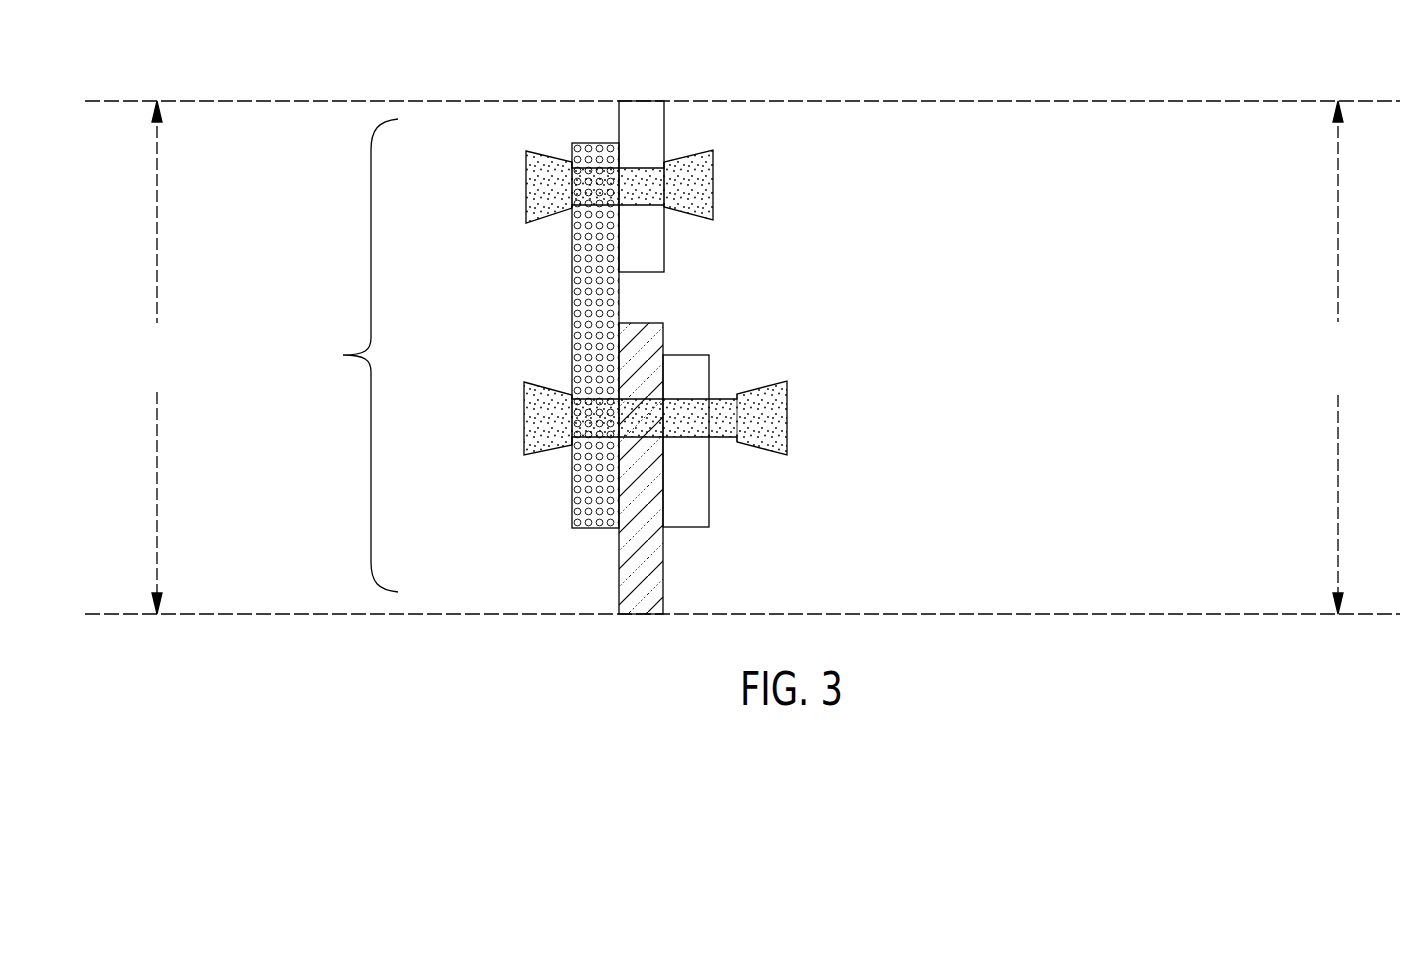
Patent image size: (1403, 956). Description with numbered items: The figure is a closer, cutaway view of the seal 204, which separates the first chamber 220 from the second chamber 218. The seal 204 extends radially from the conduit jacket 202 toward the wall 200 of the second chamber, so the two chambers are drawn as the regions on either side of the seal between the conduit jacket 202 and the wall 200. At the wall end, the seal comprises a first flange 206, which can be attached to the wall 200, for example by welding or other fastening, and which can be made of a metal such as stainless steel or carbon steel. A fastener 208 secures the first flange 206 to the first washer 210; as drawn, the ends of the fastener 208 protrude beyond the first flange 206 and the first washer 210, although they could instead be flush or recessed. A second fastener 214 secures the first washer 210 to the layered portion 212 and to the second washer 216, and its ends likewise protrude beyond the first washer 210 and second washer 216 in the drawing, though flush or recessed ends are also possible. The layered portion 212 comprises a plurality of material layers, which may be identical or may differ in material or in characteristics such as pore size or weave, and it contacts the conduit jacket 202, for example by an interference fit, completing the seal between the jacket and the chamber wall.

The wall of second chamber 200 is at (1040, 102).
The conduit jacket 202 is at (1068, 614).
The seal 204 is at (584, 322).
The first flange 206 is at (663, 115).
The fastener 208 is at (713, 185).
The first washer 210 is at (572, 257).
The layered portion 212 is at (657, 545).
The fastener 214 is at (525, 420).
The second washer 216 is at (703, 477).
The second chamber 218 is at (1300, 358).
The first chamber 220 is at (180, 348).